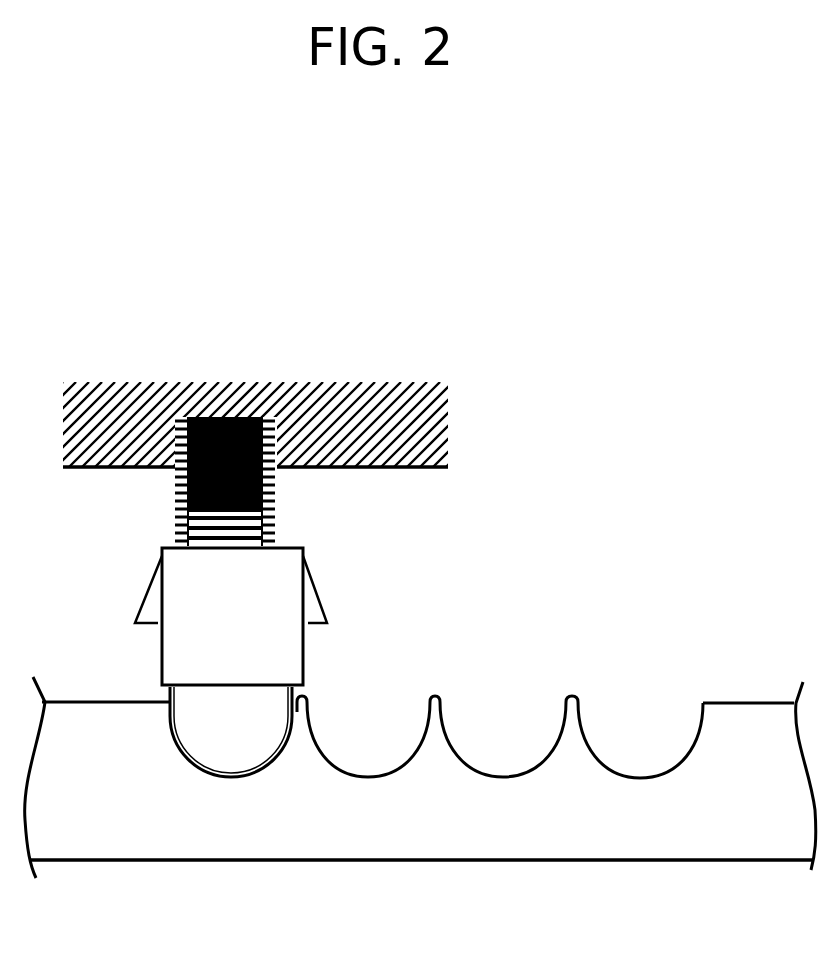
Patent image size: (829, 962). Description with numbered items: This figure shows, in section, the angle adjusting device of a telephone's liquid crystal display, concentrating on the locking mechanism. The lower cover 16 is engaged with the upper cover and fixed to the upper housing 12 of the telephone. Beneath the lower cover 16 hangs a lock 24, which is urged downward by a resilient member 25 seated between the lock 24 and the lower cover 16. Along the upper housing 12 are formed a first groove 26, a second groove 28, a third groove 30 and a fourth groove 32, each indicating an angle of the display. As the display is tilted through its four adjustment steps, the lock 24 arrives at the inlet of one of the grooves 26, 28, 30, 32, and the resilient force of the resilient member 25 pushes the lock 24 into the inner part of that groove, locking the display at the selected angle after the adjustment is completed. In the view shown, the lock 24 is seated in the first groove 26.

The upper housing 12 is at (62, 848).
The lower cover 16 is at (381, 430).
The lock 24 is at (297, 648).
The resilient member 25 is at (268, 472).
The first groove 26 is at (232, 778).
The second groove 28 is at (392, 755).
The third groove 30 is at (506, 758).
The fourth groove 32 is at (641, 765).